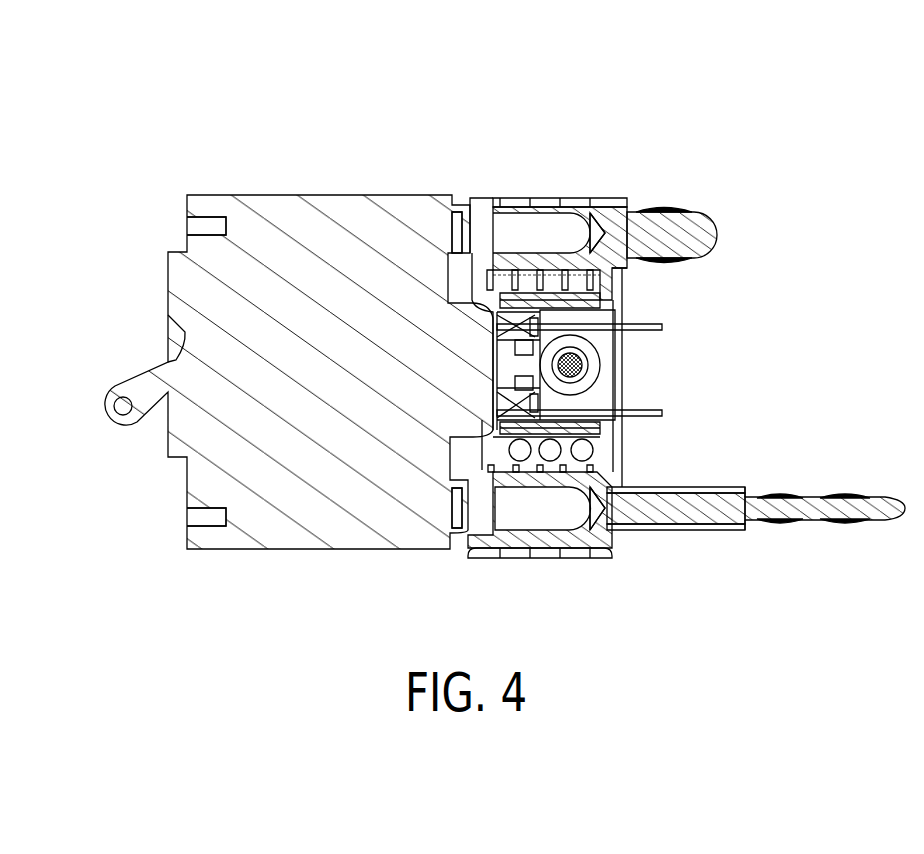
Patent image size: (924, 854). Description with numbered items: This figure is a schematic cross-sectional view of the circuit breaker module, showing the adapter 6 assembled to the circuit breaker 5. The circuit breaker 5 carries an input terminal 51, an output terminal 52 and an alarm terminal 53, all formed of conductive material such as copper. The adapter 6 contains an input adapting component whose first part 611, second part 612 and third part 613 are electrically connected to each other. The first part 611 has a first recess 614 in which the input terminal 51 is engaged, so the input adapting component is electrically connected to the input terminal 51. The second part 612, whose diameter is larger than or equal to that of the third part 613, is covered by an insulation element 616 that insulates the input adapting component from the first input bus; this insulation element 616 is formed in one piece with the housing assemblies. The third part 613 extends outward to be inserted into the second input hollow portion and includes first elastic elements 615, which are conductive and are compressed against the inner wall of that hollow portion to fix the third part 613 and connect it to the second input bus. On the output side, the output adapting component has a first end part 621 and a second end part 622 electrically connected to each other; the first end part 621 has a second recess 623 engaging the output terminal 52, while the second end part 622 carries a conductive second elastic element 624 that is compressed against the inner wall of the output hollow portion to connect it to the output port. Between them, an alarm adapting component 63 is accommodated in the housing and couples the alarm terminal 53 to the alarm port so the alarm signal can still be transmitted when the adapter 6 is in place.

The circuit breaker 5 is at (346, 178).
The adapter 6 is at (682, 326).
The input terminal 51 is at (549, 546).
The output terminal 52 is at (558, 189).
The alarm terminal 53 is at (596, 288).
The alarm adapting component 63 is at (662, 414).
The first part 611 is at (549, 557).
The second part 612 is at (687, 501).
The third part 613 is at (825, 501).
The first recess 614 is at (598, 556).
The first elastic element 615 is at (843, 497).
The insulation element 616 is at (722, 487).
The first end part 621 is at (572, 198).
The second end part 622 is at (711, 200).
The second recess 623 is at (603, 198).
The second elastic element 624 is at (657, 210).